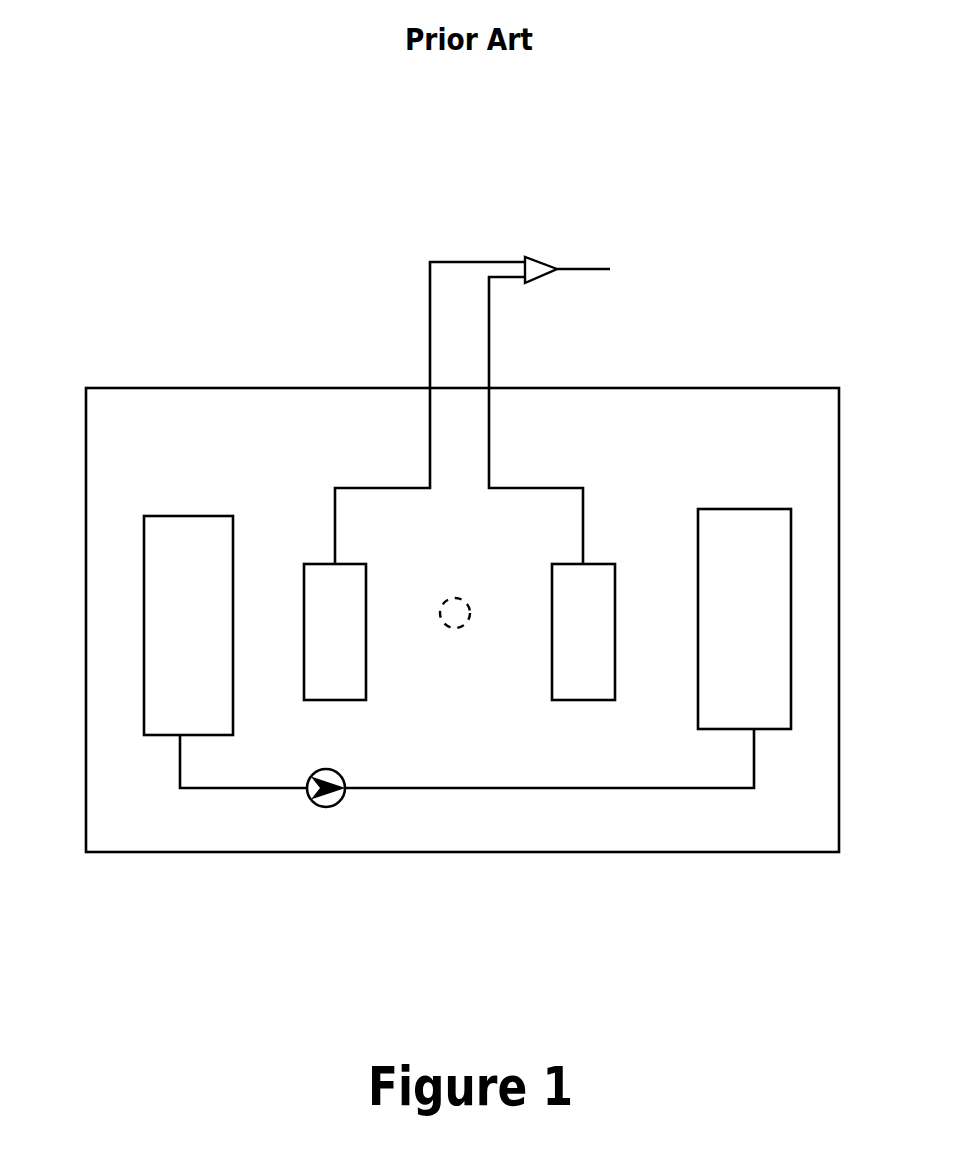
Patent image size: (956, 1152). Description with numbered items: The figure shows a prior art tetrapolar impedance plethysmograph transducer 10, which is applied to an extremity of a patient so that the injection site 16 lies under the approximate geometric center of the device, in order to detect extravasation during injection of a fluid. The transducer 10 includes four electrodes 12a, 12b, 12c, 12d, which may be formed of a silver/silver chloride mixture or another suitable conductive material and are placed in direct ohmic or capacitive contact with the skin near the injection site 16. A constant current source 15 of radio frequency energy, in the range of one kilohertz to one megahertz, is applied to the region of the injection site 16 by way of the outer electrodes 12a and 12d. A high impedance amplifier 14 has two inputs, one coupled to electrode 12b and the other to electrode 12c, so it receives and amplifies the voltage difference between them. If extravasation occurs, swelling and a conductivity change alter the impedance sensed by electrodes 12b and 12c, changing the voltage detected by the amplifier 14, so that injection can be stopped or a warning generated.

The transducer 10 is at (162, 326).
The electrode 12a is at (214, 638).
The electrode 12b is at (362, 638).
The electrode 12c is at (611, 638).
The electrode 12d is at (773, 637).
The high impedance amplifier 14 is at (540, 258).
The constant current source 15 is at (326, 808).
The injection site 16 is at (457, 632).